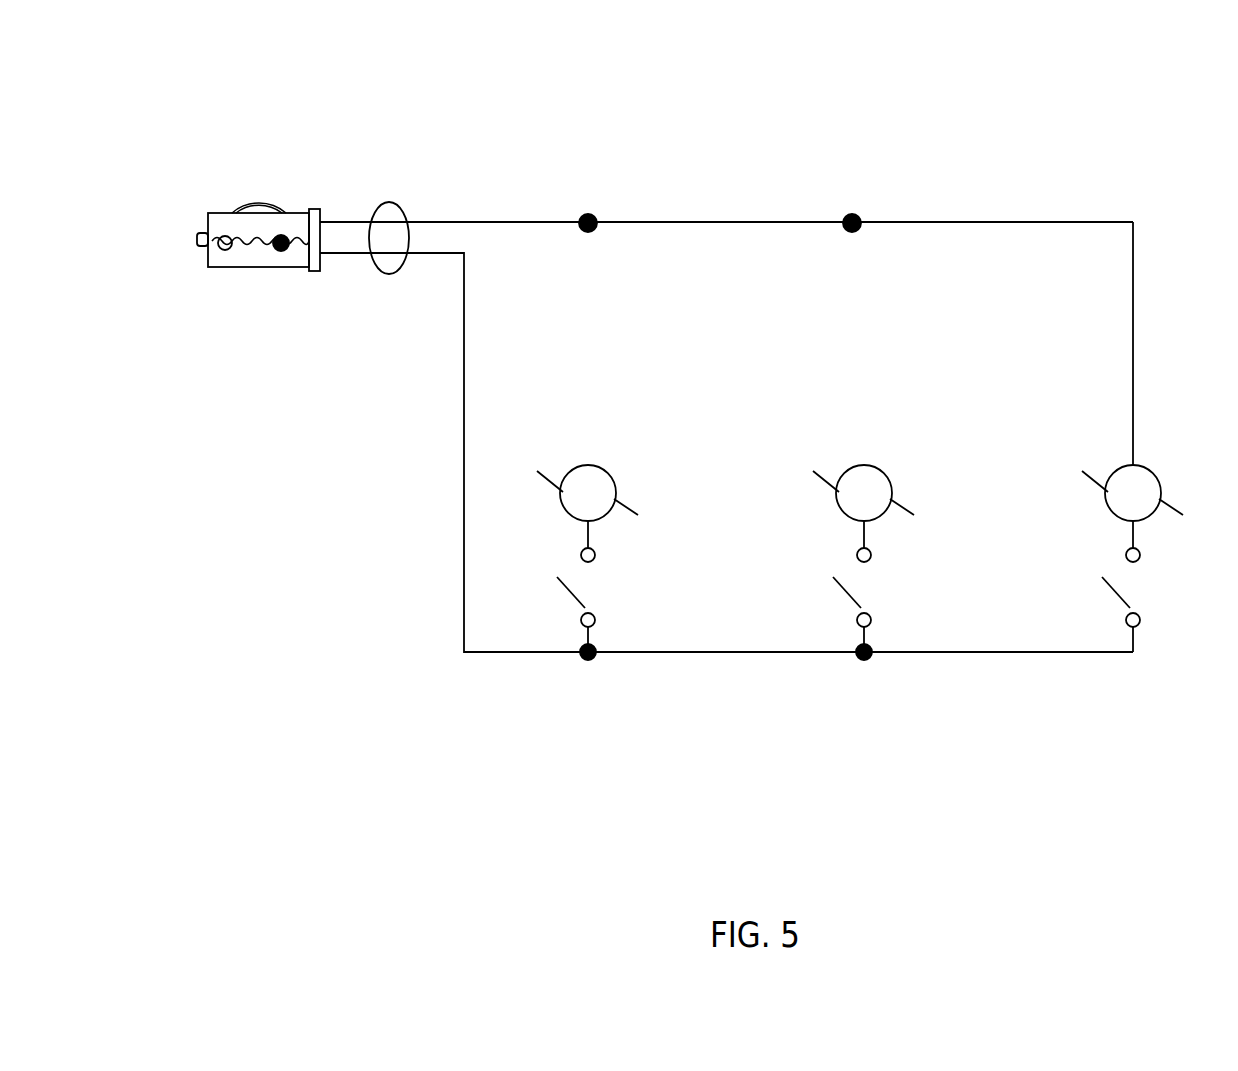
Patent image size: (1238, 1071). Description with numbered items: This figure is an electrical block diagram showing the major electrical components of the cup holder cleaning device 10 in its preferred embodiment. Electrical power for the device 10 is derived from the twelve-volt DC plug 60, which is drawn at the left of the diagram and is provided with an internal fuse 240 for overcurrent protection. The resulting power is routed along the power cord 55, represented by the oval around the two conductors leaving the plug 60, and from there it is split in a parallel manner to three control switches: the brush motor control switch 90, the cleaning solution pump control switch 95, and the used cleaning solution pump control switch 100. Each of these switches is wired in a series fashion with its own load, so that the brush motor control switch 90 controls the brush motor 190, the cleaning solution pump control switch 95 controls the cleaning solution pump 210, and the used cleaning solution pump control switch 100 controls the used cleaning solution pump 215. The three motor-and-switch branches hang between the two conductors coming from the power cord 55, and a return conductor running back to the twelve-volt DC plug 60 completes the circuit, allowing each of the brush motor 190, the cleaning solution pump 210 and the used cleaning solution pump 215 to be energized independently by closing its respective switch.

The cup holder cleaning device 10 is at (463, 194).
The internal fuse 240 is at (258, 242).
The 12-VDC plug 60 is at (263, 267).
The power cord 55 is at (389, 274).
The brush motor 190 is at (562, 500).
The brush motor control switch 90 is at (570, 595).
The cleaning solution pump 210 is at (837, 503).
The cleaning solution pump control switch 95 is at (845, 595).
The used cleaning solution pump 215 is at (1107, 504).
The used cleaning solution pump control switch 100 is at (1115, 596).